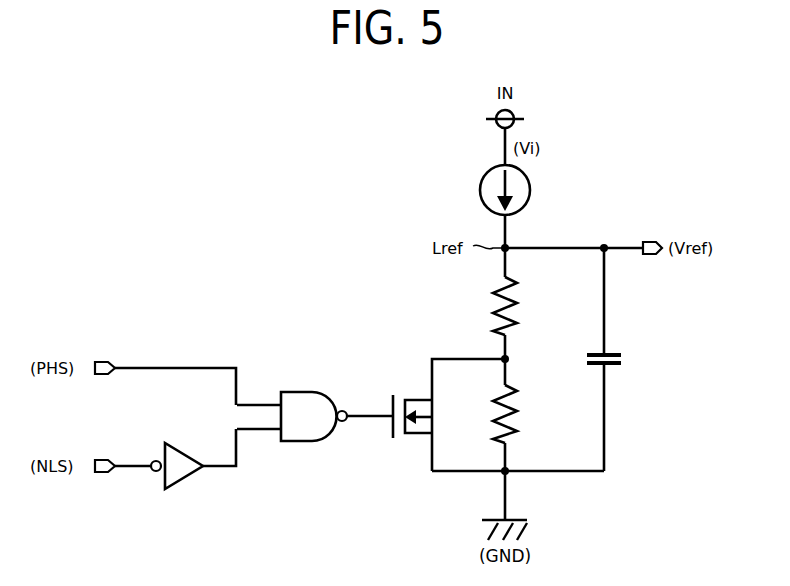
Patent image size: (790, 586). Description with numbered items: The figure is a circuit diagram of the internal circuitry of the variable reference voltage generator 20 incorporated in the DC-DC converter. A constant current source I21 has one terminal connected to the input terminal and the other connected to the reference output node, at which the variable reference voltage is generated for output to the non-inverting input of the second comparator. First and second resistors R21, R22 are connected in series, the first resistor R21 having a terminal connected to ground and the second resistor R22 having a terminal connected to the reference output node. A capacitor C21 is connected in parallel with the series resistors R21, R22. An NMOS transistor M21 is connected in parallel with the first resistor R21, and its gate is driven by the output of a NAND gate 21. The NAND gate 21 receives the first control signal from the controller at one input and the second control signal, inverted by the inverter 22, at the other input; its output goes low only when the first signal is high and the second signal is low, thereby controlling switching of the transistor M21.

The variable reference voltage generator 20 is at (227, 185).
The NAND gate 21 is at (297, 392).
The inverter 22 is at (183, 443).
The constant current source I21 is at (485, 190).
The first resistor R21 is at (523, 414).
The second resistor R22 is at (523, 306).
The capacitor C21 is at (627, 359).
The NMOS transistor M21 is at (425, 415).